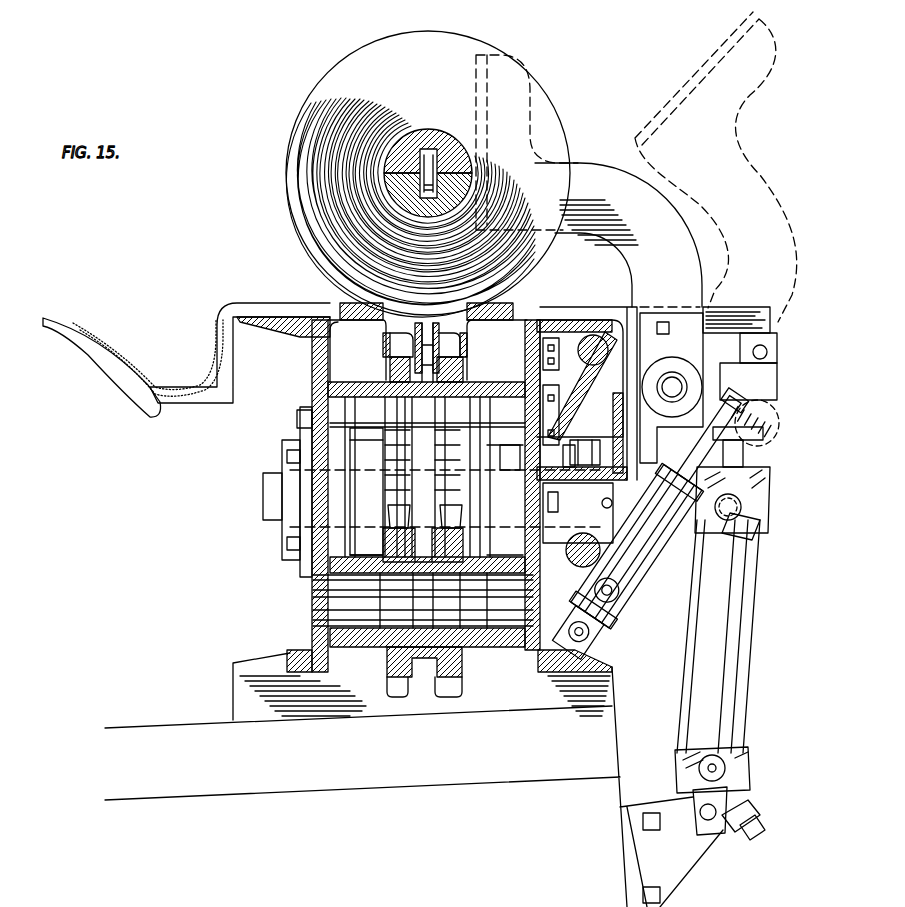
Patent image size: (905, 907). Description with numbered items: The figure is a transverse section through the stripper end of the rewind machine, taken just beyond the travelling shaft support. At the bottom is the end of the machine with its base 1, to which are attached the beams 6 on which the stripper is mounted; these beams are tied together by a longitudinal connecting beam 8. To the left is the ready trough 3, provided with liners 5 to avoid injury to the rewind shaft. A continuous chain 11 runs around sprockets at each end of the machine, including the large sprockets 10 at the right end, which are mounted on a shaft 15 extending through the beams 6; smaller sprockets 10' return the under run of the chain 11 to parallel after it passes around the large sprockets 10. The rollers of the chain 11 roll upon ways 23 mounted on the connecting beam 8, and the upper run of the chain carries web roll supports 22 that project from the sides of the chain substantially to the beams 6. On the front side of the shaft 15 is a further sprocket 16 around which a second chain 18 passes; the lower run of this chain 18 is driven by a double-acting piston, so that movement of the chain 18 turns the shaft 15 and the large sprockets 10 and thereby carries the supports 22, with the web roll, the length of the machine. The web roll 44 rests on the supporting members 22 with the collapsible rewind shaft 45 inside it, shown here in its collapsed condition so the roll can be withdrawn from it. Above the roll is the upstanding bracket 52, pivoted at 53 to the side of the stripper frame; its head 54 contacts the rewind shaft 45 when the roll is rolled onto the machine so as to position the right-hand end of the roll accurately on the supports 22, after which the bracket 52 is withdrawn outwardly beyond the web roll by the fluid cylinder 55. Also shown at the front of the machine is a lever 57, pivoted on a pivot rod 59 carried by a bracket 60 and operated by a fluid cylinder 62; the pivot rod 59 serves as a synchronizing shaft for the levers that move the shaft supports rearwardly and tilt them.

The base 1 is at (147, 740).
The ready trough 3 is at (110, 358).
The liners 5 is at (200, 362).
The beams 6 is at (313, 360).
The longitudinal connecting beam 8 is at (340, 376).
The sprockets 10 is at (428, 511).
The smaller sprockets 10' is at (423, 611).
The chain 11 is at (388, 353).
The shaft 15 is at (265, 522).
The further sprocket 16 is at (586, 452).
The chain 18 is at (566, 456).
The web roll supports 22 is at (340, 302).
The ways 23 is at (470, 380).
The web roll 44 is at (462, 46).
The rewind shaft 45 is at (446, 145).
The pivoted bracket 52 is at (645, 182).
The pivot 53 is at (680, 384).
The head 54 is at (476, 85).
The fluid cylinder 55 is at (640, 572).
The lever 57 is at (730, 318).
The pivot rod 59 is at (592, 368).
The brackets 60 is at (545, 352).
The fluid cylinder 62 is at (740, 680).